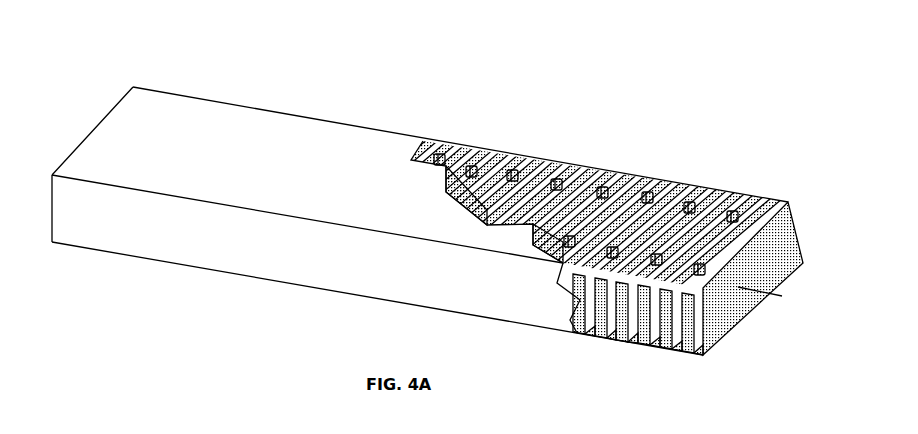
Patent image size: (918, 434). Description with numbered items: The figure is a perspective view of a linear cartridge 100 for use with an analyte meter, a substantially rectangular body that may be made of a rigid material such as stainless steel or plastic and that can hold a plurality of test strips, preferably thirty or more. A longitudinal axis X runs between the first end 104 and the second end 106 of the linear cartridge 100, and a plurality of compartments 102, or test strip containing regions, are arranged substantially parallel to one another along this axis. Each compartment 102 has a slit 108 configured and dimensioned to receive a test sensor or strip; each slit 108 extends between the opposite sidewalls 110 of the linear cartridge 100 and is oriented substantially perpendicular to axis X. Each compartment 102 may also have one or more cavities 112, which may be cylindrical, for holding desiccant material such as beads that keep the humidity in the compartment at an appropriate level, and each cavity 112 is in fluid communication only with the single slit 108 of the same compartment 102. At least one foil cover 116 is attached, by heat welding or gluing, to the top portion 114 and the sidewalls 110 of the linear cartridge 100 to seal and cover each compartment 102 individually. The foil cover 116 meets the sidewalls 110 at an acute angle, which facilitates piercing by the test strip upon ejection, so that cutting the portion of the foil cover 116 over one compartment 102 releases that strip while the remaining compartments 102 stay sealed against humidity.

The linear cartridge 100 is at (262, 50).
The compartment 102 is at (696, 178).
The first end 104 is at (710, 352).
The second end 106 is at (52, 242).
The slit 108 is at (623, 172).
The sidewall 110 is at (610, 332).
The cavity 112 is at (570, 177).
The top portion 114 is at (508, 186).
The foil cover 116 is at (283, 250).